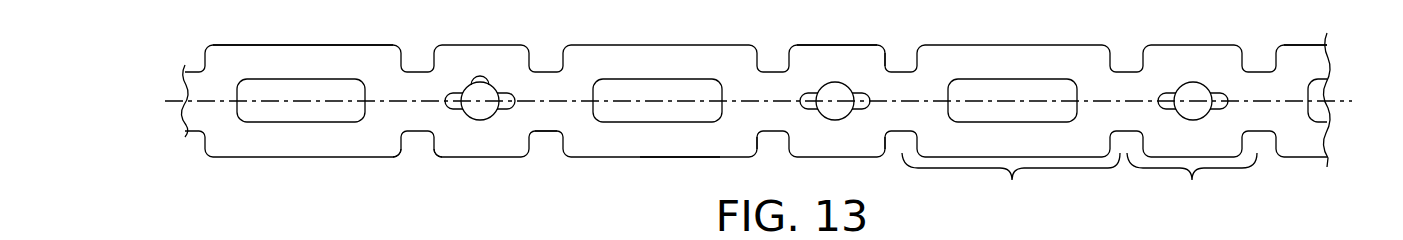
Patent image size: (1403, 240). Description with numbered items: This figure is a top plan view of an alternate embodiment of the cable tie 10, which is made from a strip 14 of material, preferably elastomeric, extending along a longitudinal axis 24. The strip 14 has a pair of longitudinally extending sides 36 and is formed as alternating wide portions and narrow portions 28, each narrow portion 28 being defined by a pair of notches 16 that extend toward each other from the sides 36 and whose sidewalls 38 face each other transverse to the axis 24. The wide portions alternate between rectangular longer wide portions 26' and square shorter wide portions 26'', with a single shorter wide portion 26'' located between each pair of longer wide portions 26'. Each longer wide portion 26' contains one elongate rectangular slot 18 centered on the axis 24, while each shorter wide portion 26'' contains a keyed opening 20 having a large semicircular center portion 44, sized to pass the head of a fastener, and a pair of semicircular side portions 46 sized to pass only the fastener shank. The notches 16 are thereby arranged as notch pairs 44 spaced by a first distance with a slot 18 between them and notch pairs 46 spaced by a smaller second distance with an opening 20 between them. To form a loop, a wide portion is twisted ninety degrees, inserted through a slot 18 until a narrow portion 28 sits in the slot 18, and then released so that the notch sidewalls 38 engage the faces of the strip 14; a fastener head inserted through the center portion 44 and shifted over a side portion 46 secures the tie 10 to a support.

The cable tie 10 is at (158, 102).
The strip 14 is at (1314, 40).
The notches 16 is at (900, 50).
The slots 18 is at (618, 115).
The openings 20 is at (478, 113).
The longitudinal axis 24 is at (1336, 100).
The longer wide portions 26' is at (680, 173).
The shorter wide portions 26'' is at (538, 166).
The narrow portions 28 is at (772, 115).
The longitudinally extending sides 36 is at (253, 158).
The sidewalls 38 is at (402, 150).
The semicircular center portion 44 is at (488, 82).
The semicircular side portions 46 is at (460, 92).